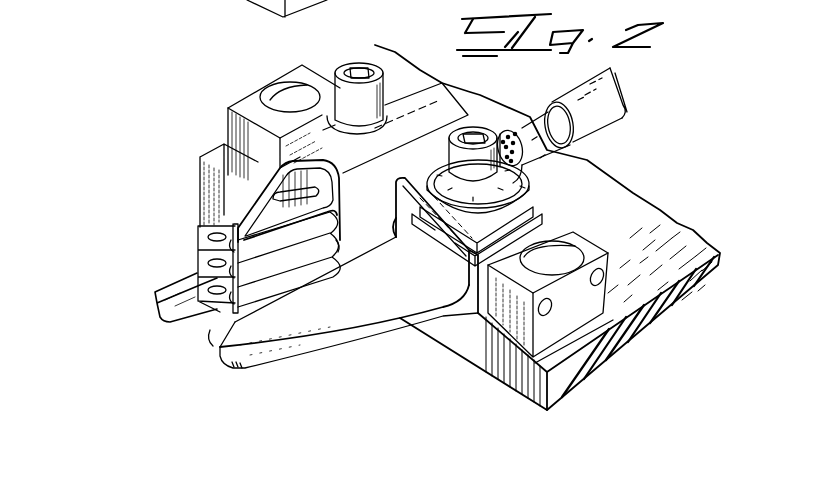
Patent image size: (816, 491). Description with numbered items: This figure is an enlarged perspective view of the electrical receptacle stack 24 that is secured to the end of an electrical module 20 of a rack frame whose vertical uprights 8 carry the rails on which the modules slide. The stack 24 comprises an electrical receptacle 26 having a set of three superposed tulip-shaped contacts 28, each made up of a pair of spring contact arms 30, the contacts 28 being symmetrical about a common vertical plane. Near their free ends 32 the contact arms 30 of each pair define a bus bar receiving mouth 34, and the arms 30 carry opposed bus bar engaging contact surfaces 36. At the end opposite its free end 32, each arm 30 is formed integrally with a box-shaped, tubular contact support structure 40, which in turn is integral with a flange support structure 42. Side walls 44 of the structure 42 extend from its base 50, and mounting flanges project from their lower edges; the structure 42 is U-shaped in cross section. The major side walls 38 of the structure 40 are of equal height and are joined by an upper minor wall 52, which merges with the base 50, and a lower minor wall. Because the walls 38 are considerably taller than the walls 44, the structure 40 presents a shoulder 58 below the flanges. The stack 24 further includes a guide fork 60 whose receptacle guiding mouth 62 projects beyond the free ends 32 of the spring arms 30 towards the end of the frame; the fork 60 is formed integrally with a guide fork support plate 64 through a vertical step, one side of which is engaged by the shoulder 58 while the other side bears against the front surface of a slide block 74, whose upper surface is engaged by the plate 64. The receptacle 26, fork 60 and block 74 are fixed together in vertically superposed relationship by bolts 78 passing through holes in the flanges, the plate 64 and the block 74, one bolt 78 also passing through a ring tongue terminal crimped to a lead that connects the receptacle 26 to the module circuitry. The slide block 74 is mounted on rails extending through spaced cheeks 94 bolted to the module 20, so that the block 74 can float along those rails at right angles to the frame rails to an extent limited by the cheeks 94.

The vertical uprights 8 is at (265, 13).
The electrical module 20 is at (640, 246).
The electrical receptacle stack 24 is at (650, 143).
The electrical receptacle 26 is at (155, 264).
The tulip-shaped contact 28 is at (287, 298).
The spring contact arm 30 is at (222, 210).
The free end 32 is at (197, 241).
The bus bar receiving mouth 34 is at (206, 221).
The contact surface 36 is at (197, 268).
The side wall of contact support structure 38 is at (379, 212).
The contact support structure 40 is at (303, 156).
The flange support structure 42 is at (412, 98).
The side wall of flange support structure 44 is at (407, 183).
The base of flange support structure 50 is at (440, 101).
The upper minor wall 52 is at (342, 170).
The shoulder 58 is at (395, 243).
The guide fork 60 is at (290, 352).
The receptacle guiding mouth 62 is at (212, 338).
The guide fork support plate 64 is at (515, 220).
The slide block 74 is at (545, 232).
The bolt 78 is at (363, 63).
The cheek 94 is at (587, 313).